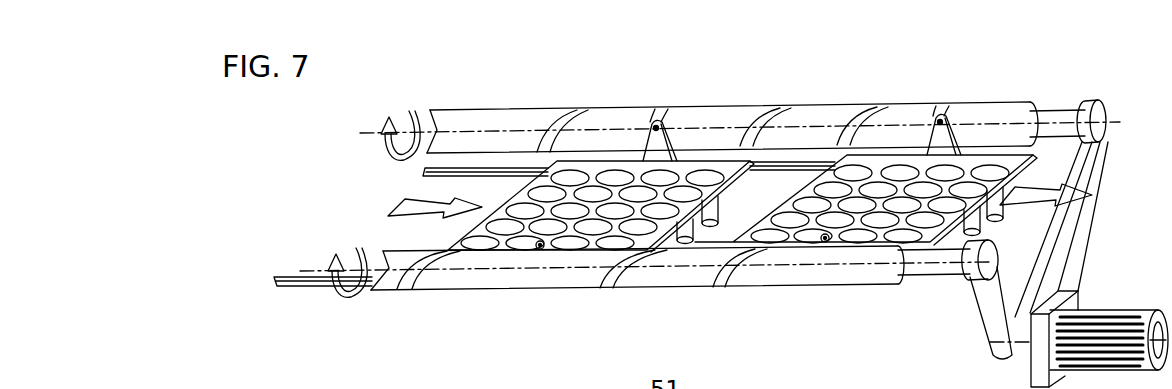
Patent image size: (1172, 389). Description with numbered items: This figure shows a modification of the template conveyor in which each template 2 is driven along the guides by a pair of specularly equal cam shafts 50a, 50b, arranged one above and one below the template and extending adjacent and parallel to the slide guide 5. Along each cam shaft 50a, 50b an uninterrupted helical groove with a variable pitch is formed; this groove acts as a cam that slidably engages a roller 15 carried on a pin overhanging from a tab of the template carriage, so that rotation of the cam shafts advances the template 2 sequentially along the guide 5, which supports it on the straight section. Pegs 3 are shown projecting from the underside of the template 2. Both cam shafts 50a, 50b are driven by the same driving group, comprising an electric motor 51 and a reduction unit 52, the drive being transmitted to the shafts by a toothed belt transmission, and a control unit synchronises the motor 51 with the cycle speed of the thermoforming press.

The cam shaft 50a is at (830, 118).
The cam shaft 50b is at (830, 273).
The slide guide 5 is at (425, 172).
The template 2 is at (741, 189).
The positioning peg 3 is at (713, 213).
The roller 15 is at (537, 249).
The reduction unit 52 is at (1068, 292).
The electric motor 51 is at (1120, 311).